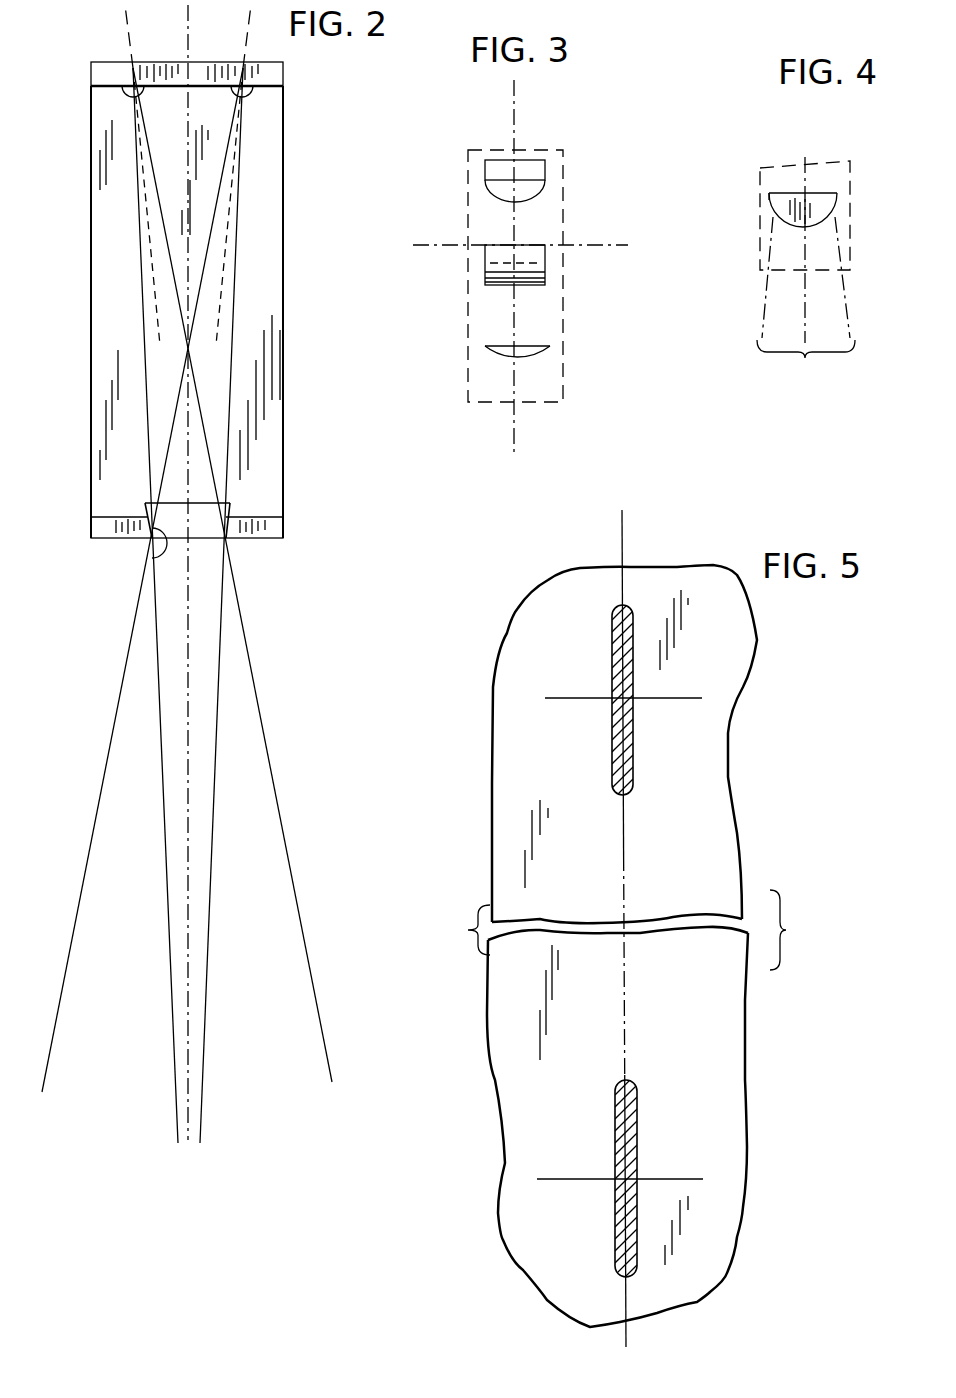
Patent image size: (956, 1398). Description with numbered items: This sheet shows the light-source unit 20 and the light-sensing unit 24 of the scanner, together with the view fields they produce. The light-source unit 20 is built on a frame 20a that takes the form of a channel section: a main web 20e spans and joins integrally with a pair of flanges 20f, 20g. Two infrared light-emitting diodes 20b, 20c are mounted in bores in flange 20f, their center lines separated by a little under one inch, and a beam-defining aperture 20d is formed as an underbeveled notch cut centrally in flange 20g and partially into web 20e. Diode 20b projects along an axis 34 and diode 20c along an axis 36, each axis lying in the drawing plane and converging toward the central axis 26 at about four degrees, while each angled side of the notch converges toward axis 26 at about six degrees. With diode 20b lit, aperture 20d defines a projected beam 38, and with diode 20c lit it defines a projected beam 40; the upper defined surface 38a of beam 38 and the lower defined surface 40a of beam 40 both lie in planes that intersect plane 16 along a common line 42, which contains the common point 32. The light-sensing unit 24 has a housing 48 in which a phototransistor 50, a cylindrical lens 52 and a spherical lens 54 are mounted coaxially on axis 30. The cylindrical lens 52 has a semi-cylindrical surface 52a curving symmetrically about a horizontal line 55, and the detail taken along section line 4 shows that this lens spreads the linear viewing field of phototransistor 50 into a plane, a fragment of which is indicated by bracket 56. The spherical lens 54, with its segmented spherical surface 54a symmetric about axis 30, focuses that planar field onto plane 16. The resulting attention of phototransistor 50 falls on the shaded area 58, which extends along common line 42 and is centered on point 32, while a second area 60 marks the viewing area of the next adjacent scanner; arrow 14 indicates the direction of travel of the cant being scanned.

In FIG. 5, the arrow 14 is at (760, 737).
In FIG. 5, the plane 16 is at (611, 930).
In FIG. 2, the light-source unit 20 is at (285, 181).
In FIG. 2, the frame 20a is at (283, 230).
In FIG. 2, the infrared light-emitting diode 20b is at (247, 92).
In FIG. 2, the infrared light-emitting diode 20c is at (127, 93).
In FIG. 2, the beam-defining aperture 20d is at (148, 560).
In FIG. 2, the main web 20e is at (105, 322).
In FIG. 2, the flange 20f is at (93, 73).
In FIG. 2, the flange 20g is at (105, 525).
In FIG. 3, the light-sensing unit 24 is at (562, 148).
In FIG. 4, the light-sensing unit 24 is at (753, 172).
In FIG. 2, the axis 26 is at (188, 768).
In FIG. 3, the axis 30 is at (514, 418).
In FIG. 4, the axis 30 is at (805, 298).
In FIG. 5, the common point 32 is at (629, 1177).
In FIG. 2, the axis 34 is at (215, 295).
In FIG. 2, the axis 36 is at (160, 296).
In FIG. 2, the projected beam 38 is at (205, 1012).
In FIG. 2, the upper defined surface 38a is at (205, 1054).
In FIG. 2, the projected beam 40 is at (305, 948).
In FIG. 2, the defined lower surface 40a is at (168, 900).
In FIG. 5, the common line 42 is at (624, 1056).
In FIG. 3, the housing 48 is at (568, 168).
In FIG. 4, the housing 48 is at (769, 166).
In FIG. 3, the phototransistor 50 is at (485, 170).
In FIG. 3, the cylindrical lens 52 is at (484, 263).
In FIG. 4, the cylindrical lens 52 is at (837, 206).
In FIG. 3, the semi-cylindrical surface 52a is at (545, 262).
In FIG. 4, the semi-cylindrical surface 52a is at (769, 204).
In FIG. 3, the spherical lens 54 is at (492, 354).
In FIG. 3, the segmented spherical surface 54a is at (528, 358).
In FIG. 3, the line 55 is at (443, 240).
In FIG. 4, the bracket 56 is at (806, 301).
In FIG. 5, the shaded area 58 is at (612, 1130).
In FIG. 5, the defined viewing area 60 is at (610, 739).
In FIG. 3, the section line 4- 4 is at (590, 258).